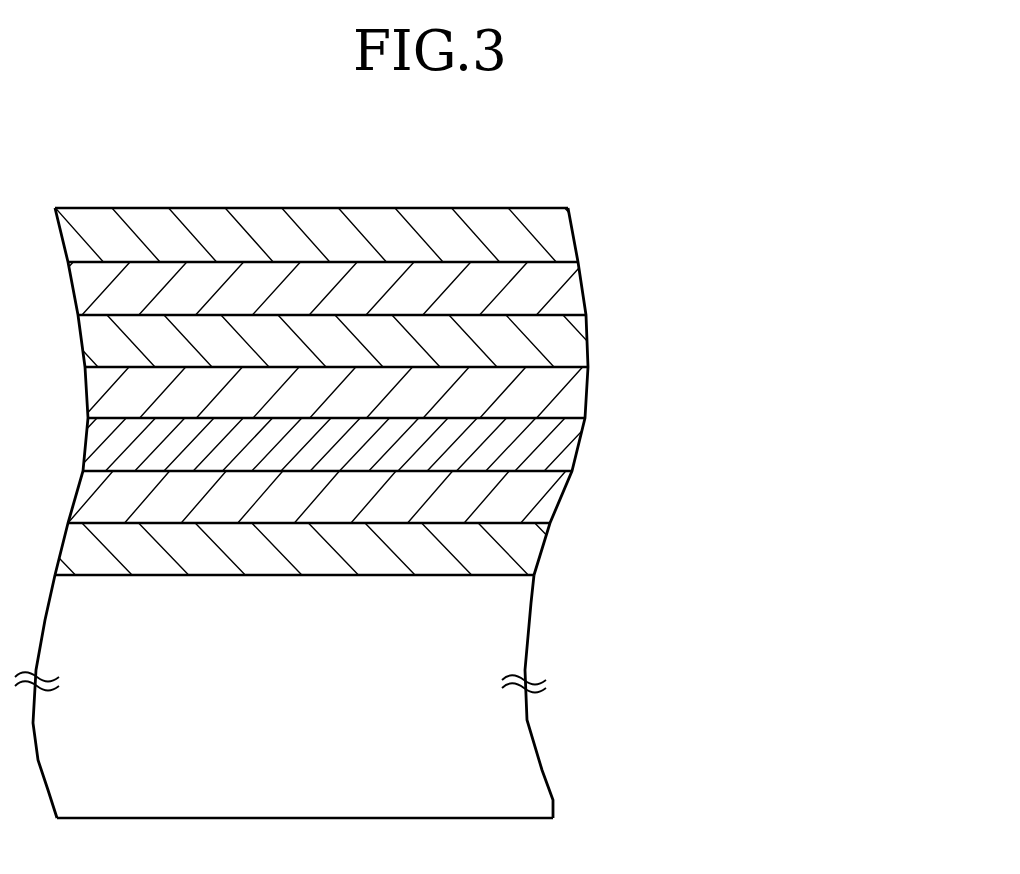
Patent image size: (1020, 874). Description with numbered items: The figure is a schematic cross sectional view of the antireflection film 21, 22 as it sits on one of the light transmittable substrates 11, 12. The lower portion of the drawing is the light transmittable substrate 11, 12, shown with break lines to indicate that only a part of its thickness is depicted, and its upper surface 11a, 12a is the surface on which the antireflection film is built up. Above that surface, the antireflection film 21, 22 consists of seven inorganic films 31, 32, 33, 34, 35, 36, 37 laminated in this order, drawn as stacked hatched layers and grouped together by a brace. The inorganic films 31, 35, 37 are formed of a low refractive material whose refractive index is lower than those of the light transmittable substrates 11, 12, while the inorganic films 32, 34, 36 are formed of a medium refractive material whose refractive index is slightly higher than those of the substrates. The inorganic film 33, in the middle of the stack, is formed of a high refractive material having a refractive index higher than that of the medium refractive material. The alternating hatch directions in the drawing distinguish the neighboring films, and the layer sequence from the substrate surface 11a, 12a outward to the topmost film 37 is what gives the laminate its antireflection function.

The light transmittable substrate 11 is at (366, 696).
The light transmittable substrate 12 is at (366, 696).
The substrate surface 11a is at (386, 623).
The substrate surface 12a is at (457, 575).
The antireflection film 21 is at (421, 390).
The antireflection film 22 is at (421, 390).
The inorganic film 31 is at (348, 549).
The inorganic film 32 is at (540, 512).
The inorganic film 33 is at (555, 445).
The inorganic film 34 is at (563, 408).
The inorganic film 35 is at (555, 340).
The inorganic film 36 is at (560, 303).
The inorganic film 37 is at (555, 237).